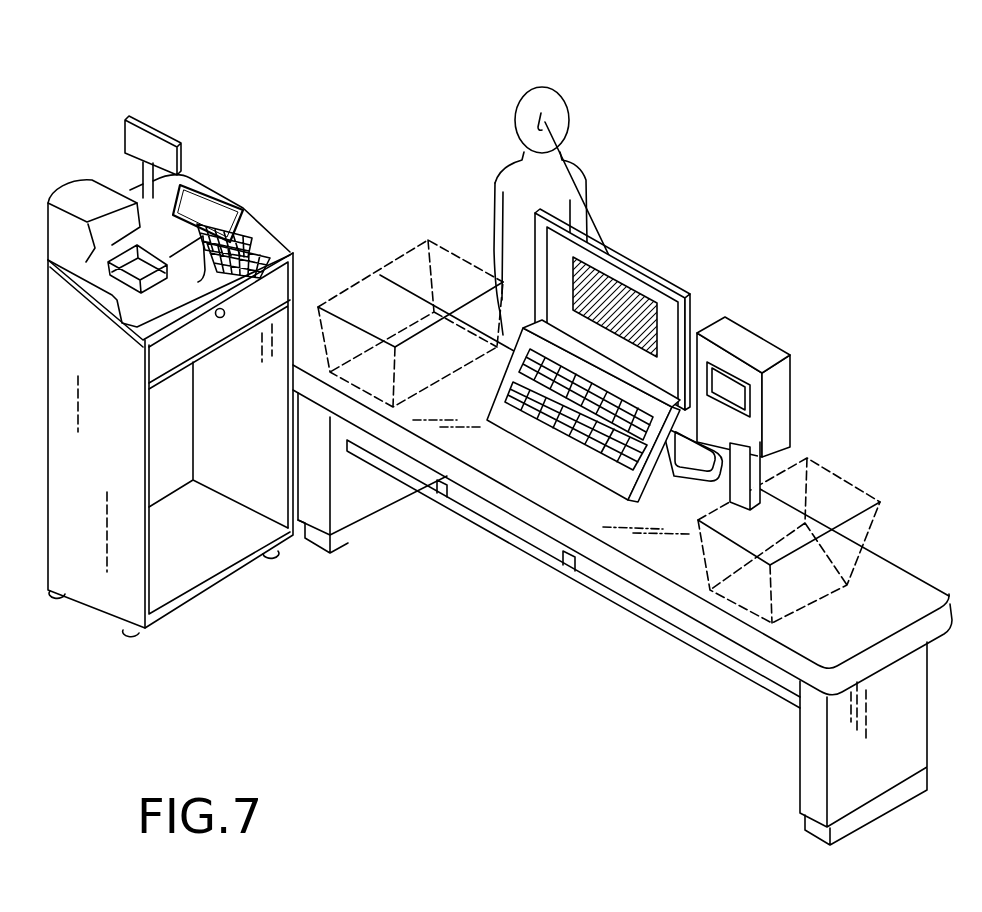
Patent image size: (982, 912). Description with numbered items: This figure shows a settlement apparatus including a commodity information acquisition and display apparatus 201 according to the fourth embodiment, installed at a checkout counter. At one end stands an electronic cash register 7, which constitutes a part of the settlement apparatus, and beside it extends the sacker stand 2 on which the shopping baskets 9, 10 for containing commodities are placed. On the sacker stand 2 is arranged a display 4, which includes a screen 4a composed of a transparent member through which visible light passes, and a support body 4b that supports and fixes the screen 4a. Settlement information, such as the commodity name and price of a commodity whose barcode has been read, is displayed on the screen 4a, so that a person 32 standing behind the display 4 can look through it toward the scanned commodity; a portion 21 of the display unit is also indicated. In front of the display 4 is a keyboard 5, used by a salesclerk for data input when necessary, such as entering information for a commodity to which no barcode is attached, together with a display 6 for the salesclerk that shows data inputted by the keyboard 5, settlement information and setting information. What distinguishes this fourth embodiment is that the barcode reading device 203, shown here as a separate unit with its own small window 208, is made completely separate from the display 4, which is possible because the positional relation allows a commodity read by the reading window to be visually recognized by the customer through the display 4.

The electronic cash register 7 is at (281, 108).
The commodity information acquisition and display apparatus 201 is at (685, 87).
The operator 32 is at (522, 98).
The shopping basket 10 is at (397, 252).
The shopping basket 9 is at (872, 489).
The sacker stand 2 is at (910, 574).
The display 4 is at (710, 196).
The screen 4a is at (633, 284).
The support body 4b is at (665, 281).
The display side housing 21 is at (690, 312).
The keyboard 5 is at (508, 370).
The display for salesclerk 6 is at (693, 453).
The barcode reading device 203 is at (783, 410).
The display window 208 is at (730, 390).